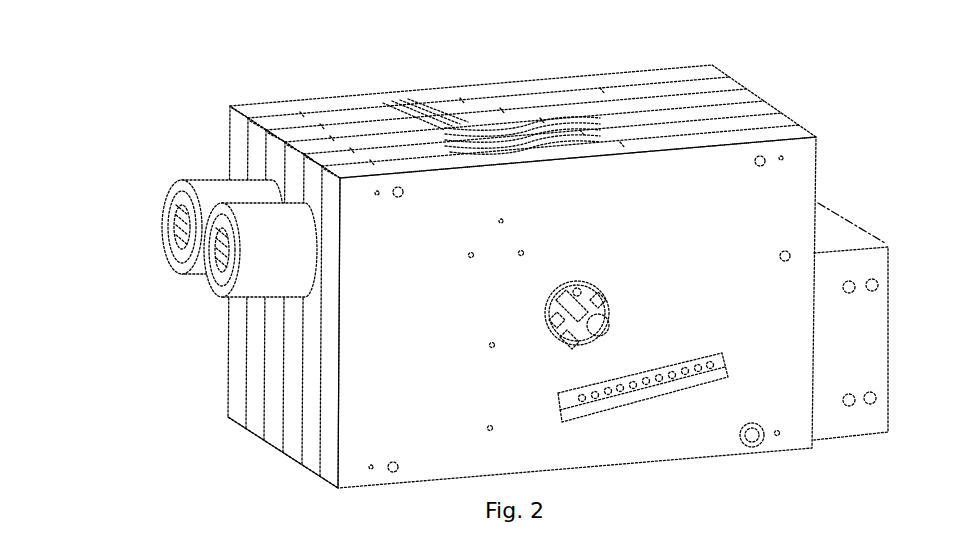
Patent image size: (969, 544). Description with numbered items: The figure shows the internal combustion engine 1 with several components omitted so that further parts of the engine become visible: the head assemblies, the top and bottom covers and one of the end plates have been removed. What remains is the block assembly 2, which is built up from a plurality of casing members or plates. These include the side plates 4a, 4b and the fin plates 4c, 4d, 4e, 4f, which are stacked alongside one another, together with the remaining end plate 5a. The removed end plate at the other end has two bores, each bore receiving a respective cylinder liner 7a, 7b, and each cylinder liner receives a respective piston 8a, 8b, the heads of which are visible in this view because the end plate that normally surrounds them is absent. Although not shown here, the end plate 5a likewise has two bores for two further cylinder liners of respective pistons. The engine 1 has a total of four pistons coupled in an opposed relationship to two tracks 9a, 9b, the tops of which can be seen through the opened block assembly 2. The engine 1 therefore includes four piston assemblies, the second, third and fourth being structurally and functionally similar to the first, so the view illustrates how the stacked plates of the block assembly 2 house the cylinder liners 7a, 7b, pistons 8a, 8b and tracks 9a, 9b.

The internal combustion engine 1 is at (232, 87).
The block assembly 2 is at (331, 106).
The side plate 4a is at (666, 78).
The side plate 4b is at (799, 137).
The fin plate 4c is at (705, 88).
The fin plate 4d is at (749, 97).
The fin plate 4e is at (768, 108).
The fin plate 4f is at (776, 125).
The end plate 5a is at (855, 263).
The cylinder liner 7a is at (213, 183).
The cylinder liner 7b is at (247, 287).
The piston 8a is at (177, 206).
The piston 8b is at (220, 263).
The track 9a is at (452, 102).
The track 9b is at (518, 130).